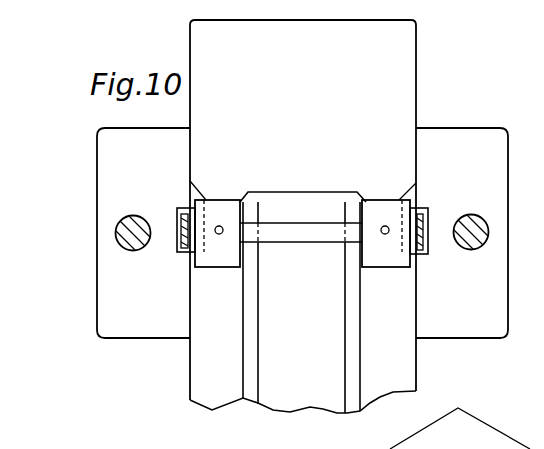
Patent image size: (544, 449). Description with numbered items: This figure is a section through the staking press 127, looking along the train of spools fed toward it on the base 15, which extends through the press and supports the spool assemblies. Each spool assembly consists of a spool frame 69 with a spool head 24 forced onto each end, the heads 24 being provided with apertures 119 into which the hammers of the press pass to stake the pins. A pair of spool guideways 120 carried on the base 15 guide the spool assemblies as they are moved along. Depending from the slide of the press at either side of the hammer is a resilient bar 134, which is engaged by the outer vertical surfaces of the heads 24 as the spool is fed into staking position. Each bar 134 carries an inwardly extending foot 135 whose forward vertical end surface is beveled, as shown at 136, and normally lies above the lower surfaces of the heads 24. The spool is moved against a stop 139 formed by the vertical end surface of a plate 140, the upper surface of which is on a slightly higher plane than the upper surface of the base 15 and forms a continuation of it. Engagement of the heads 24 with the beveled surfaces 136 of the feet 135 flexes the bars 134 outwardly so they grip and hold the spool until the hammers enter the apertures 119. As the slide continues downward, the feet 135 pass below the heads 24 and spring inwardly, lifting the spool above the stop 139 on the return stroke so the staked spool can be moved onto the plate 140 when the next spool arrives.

The plate 140 is at (398, 97).
The staking press 127 is at (176, 161).
The spool head 24 is at (212, 270).
The aperture 119 is at (220, 235).
The resilient bar 134 is at (182, 225).
The foot 135 is at (197, 222).
The stop 139 is at (222, 200).
The spool guideway 120 is at (352, 351).
The spool frame 69 is at (292, 238).
The base 15 is at (205, 372).
The beveled surface 136 is at (190, 247).